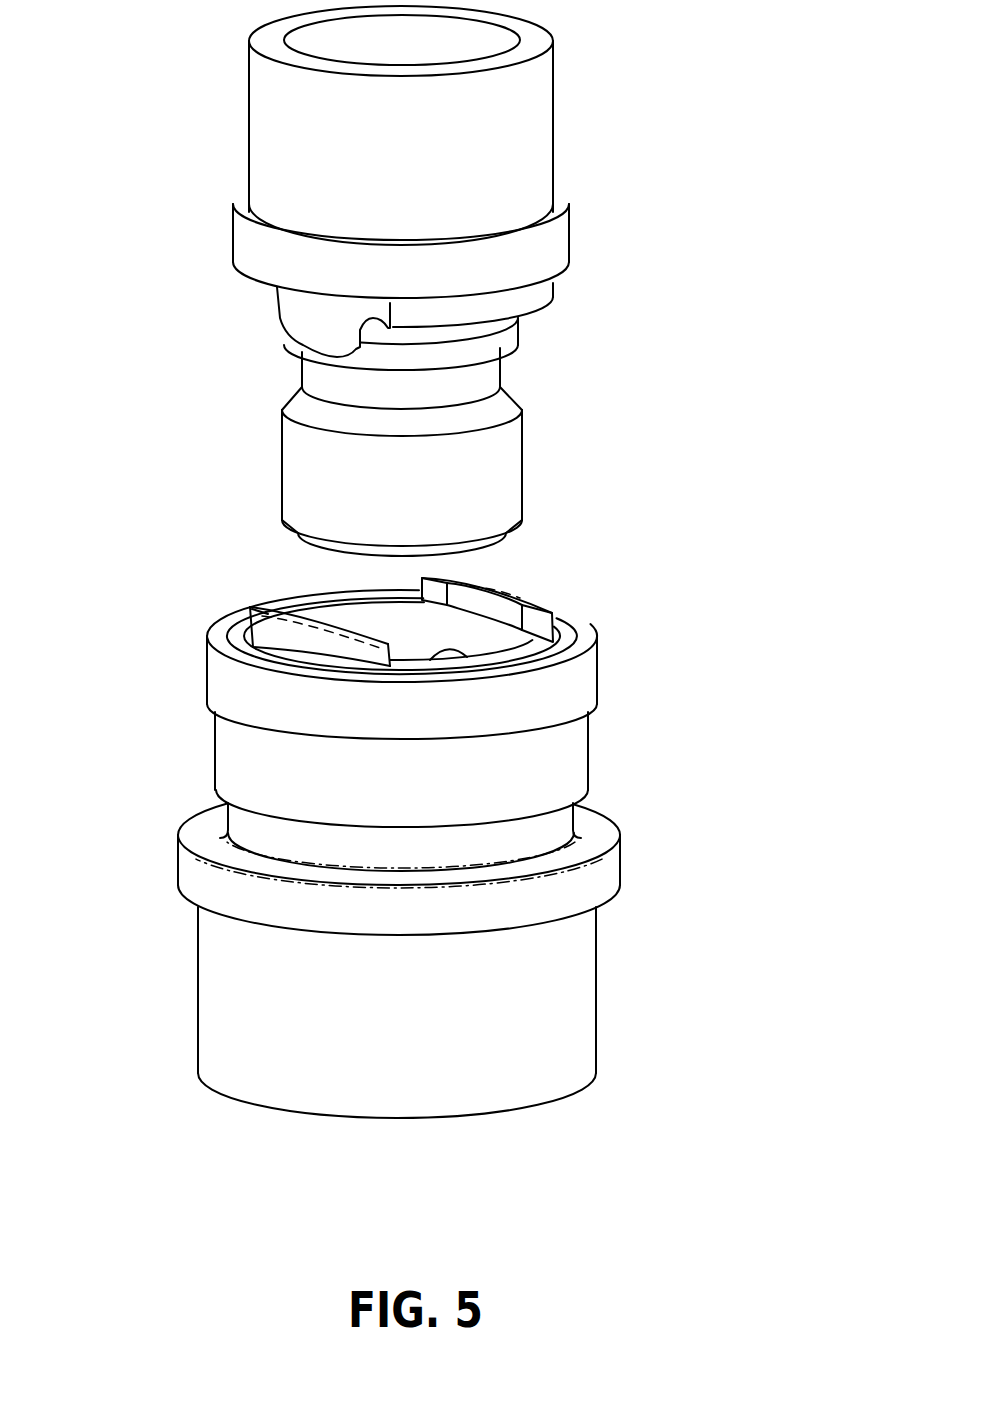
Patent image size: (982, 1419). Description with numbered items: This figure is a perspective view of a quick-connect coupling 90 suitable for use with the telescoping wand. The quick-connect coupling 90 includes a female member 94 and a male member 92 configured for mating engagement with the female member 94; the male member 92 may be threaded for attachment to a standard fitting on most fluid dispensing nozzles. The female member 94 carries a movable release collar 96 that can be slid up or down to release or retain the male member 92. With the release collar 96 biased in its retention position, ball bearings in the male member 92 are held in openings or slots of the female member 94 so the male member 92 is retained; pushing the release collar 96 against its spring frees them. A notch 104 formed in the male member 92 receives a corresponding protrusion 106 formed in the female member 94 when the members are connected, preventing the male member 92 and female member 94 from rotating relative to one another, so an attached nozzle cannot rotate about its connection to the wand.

The quick-connect coupling 90 is at (720, 177).
The male member 92 is at (545, 93).
The female member 94 is at (585, 997).
The release collar 96 is at (575, 760).
The notch 104 is at (298, 327).
The protrusion 106 is at (232, 619).